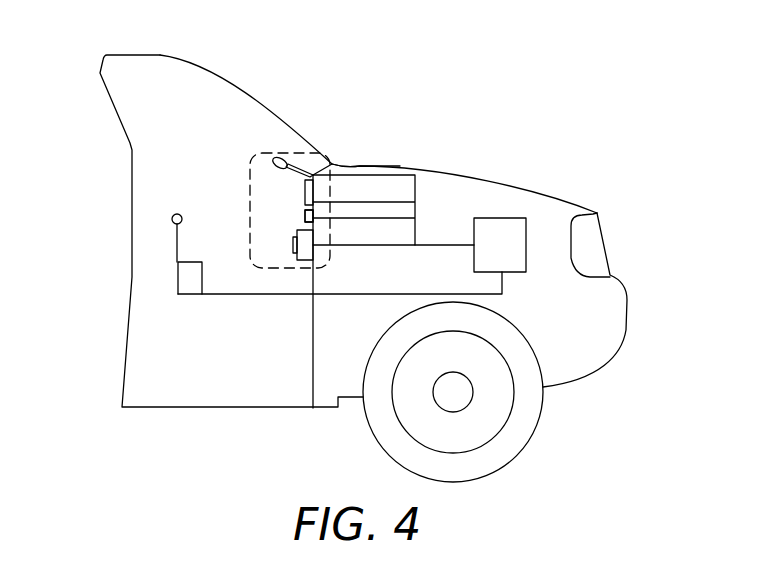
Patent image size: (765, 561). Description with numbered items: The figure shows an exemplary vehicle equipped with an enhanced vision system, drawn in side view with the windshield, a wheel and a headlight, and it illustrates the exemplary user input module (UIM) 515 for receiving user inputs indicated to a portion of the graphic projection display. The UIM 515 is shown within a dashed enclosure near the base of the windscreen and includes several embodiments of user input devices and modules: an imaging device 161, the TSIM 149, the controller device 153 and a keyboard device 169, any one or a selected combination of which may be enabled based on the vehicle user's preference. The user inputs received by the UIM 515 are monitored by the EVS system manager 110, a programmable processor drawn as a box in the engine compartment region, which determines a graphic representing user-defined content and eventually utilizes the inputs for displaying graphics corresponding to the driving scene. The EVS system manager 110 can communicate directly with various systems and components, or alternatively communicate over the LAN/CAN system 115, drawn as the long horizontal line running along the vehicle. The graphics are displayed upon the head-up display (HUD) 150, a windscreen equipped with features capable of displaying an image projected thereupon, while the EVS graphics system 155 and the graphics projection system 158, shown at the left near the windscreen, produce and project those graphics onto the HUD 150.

The EVS system manager 110 is at (510, 248).
The LAN/CAN system 115 is at (222, 297).
The TSIM 149 is at (306, 200).
The head-up display (HUD) 150 is at (262, 106).
The controller device 153 is at (298, 165).
The EVS graphics system 155 is at (187, 282).
The graphics projection system 158 is at (172, 220).
The imaging device 161 is at (293, 256).
The keyboard device 169 is at (304, 216).
The user input module (UIM) 515 is at (347, 162).